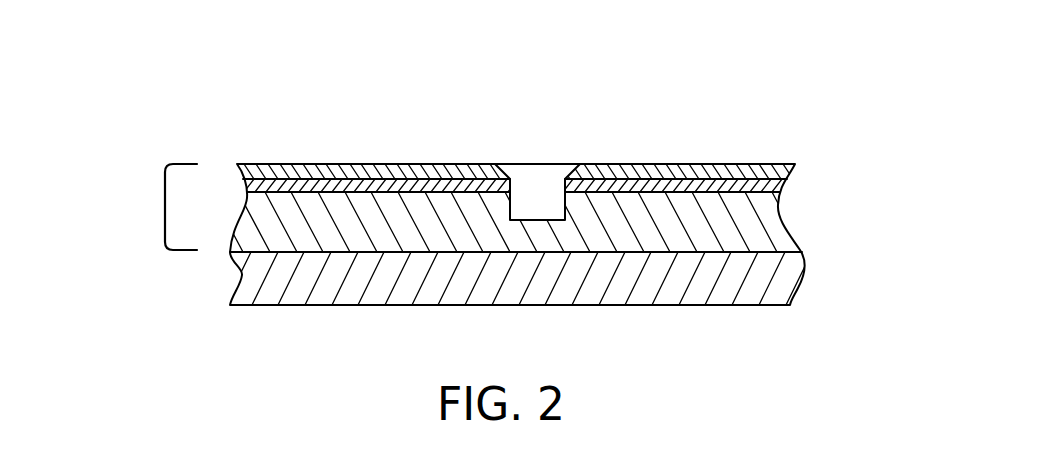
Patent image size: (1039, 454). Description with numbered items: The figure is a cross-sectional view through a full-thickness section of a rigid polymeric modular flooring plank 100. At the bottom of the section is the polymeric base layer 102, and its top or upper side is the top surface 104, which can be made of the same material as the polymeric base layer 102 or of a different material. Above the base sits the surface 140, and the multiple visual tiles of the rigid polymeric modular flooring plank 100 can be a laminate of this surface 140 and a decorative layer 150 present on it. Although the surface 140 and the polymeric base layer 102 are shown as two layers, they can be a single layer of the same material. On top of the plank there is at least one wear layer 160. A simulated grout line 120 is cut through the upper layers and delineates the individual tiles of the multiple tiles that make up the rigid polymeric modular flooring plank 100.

The rigid polymeric modular flooring plank 100 is at (678, 323).
The polymeric base layer 102 is at (255, 279).
The top surface 104 is at (165, 207).
The simulated grout line 120 is at (540, 220).
The surface 140 is at (785, 230).
The decorative layer 150 is at (783, 188).
The wear layer 160 is at (238, 173).